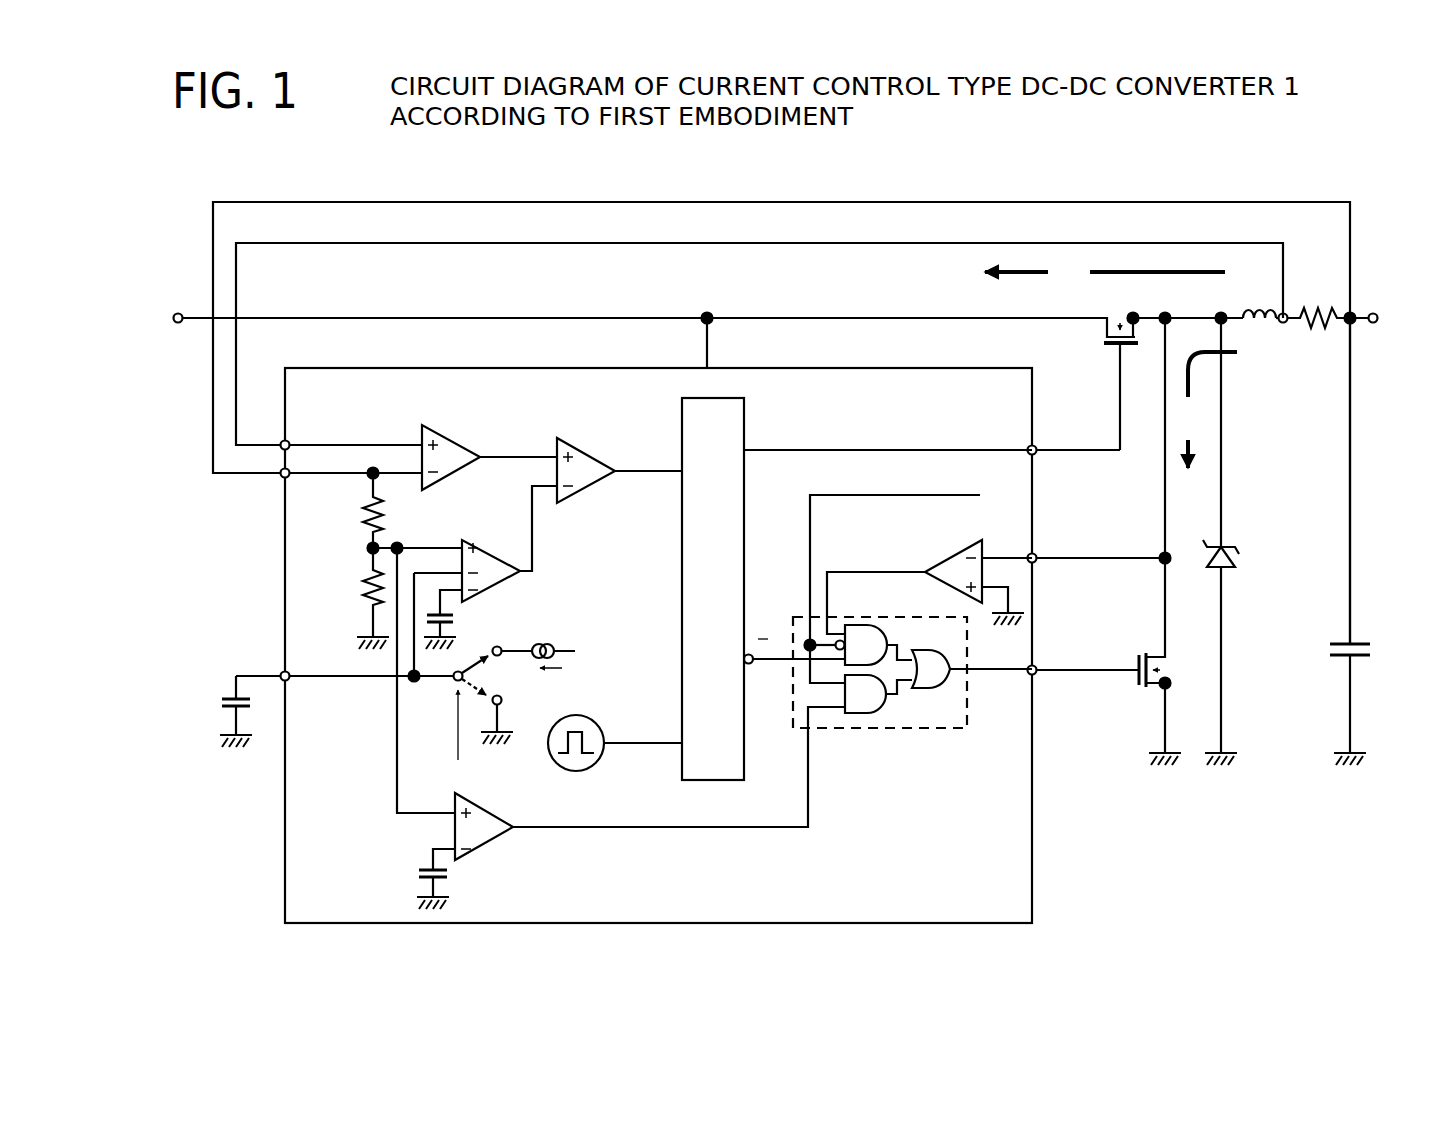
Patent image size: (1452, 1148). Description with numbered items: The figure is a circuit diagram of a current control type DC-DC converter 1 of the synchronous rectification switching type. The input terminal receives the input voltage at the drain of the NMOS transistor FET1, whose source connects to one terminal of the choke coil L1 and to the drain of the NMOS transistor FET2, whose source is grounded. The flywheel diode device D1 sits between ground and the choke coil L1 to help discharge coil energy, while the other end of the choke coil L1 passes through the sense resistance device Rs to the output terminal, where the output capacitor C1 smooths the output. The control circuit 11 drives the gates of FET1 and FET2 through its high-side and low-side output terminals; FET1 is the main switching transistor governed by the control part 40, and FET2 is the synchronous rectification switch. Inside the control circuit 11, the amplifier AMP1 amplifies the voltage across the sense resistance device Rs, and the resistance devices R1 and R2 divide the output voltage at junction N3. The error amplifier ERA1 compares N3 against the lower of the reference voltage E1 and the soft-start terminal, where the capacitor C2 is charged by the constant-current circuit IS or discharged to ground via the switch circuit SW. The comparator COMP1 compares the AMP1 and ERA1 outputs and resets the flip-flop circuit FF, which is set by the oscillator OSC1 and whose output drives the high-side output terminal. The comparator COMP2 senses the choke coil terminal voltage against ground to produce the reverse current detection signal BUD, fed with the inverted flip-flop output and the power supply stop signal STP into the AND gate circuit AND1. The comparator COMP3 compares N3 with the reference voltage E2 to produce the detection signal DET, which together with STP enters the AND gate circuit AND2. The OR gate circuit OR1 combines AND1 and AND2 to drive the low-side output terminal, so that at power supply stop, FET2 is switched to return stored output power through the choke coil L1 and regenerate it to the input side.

The DC-DC converter 1 is at (1098, 181).
The control circuit 11 is at (1032, 845).
The control part 40 is at (905, 733).
The NMOS transistor FET1 is at (1119, 367).
The NMOS transistor FET2 is at (1135, 541).
The choke coil L1 is at (1265, 302).
The sense resistance device Rs is at (1333, 305).
The diode device D1 is at (1235, 553).
The output capacitor C1 is at (1328, 651).
The capacitor C2 is at (222, 704).
The amplifier AMP1 is at (458, 420).
The comparator COMP1 is at (594, 433).
The comparator COMP2 is at (968, 532).
The comparator COMP3 is at (493, 833).
The error amplifier ERA1 is at (500, 533).
The resistance device R1 is at (357, 510).
The resistance device R2 is at (360, 598).
The junction N3 is at (368, 549).
The reference voltage E1 is at (462, 615).
The reference voltage E2 is at (426, 874).
The constant-current circuit IS is at (544, 649).
The switch circuit SW is at (452, 683).
The power supply stop signal STP is at (460, 736).
The oscillator OSC1 is at (590, 766).
The flip-flop circuit FF is at (857, 589).
The reverse current detection signal BUD is at (876, 596).
The AND gate circuit AND1 is at (872, 633).
The AND gate circuit AND2 is at (870, 722).
The OR gate circuit OR1 is at (928, 700).
The detection signal DET is at (679, 768).